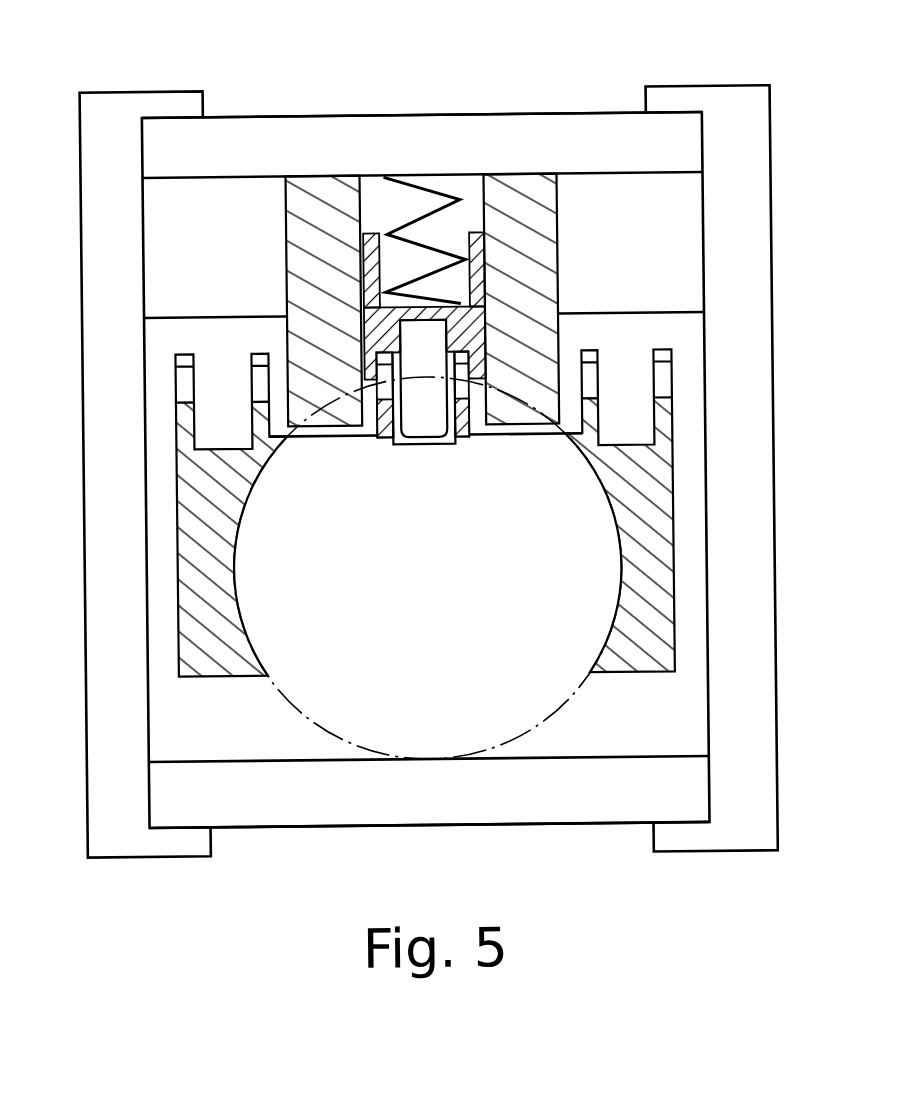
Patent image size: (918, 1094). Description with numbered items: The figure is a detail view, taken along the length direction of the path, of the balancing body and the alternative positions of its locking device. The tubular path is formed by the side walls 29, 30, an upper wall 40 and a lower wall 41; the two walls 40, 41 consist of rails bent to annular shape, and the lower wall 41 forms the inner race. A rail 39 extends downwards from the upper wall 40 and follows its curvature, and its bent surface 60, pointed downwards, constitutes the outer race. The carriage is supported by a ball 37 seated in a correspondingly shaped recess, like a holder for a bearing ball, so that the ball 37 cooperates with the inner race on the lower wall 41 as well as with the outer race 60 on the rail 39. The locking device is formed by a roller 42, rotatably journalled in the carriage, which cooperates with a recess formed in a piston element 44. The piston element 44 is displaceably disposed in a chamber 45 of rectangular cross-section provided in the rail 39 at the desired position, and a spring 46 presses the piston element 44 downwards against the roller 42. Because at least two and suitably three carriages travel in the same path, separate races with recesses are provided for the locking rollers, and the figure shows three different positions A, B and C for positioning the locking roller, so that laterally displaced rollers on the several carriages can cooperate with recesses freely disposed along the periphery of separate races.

The side wall 29 is at (110, 533).
The side wall 30 is at (753, 433).
The ball 37 is at (577, 602).
The rail 39 is at (556, 187).
The upper wall 40 is at (241, 139).
The lower wall 41 is at (377, 802).
The roller 42 is at (421, 421).
The piston element 44 is at (482, 347).
The chamber 45 is at (377, 207).
The spring 46 is at (443, 199).
The bent surface 60 is at (318, 410).
The roller position A is at (242, 340).
The roller position B is at (440, 268).
The roller position C is at (621, 345).